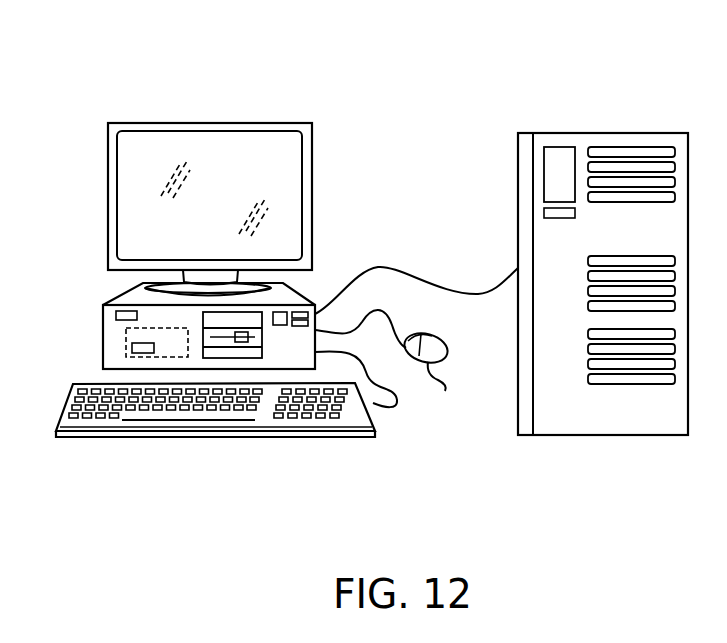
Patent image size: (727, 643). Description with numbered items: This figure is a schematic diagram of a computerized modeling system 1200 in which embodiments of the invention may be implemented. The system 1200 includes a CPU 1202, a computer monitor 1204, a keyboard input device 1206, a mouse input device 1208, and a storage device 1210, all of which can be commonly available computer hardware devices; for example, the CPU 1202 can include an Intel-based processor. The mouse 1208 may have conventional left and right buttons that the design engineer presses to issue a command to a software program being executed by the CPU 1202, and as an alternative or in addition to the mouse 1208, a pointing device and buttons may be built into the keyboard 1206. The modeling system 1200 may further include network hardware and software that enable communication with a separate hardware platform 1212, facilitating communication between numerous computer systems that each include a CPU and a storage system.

The computerized modeling system 1200 is at (277, 70).
The CPU 1202 is at (126, 347).
The computer monitor 1204 is at (282, 169).
The keyboard input device 1206 is at (65, 407).
The mouse input device 1208 is at (438, 375).
The storage device 1210 is at (258, 317).
The hardware platform 1212 is at (594, 133).